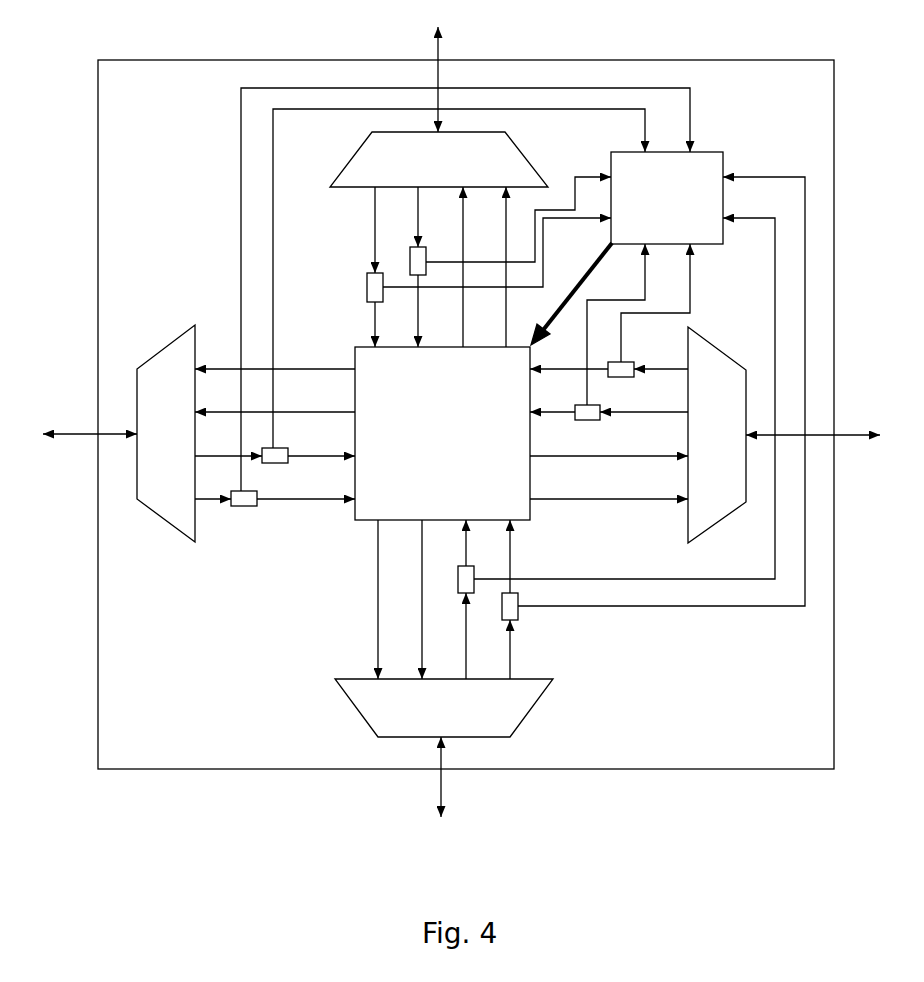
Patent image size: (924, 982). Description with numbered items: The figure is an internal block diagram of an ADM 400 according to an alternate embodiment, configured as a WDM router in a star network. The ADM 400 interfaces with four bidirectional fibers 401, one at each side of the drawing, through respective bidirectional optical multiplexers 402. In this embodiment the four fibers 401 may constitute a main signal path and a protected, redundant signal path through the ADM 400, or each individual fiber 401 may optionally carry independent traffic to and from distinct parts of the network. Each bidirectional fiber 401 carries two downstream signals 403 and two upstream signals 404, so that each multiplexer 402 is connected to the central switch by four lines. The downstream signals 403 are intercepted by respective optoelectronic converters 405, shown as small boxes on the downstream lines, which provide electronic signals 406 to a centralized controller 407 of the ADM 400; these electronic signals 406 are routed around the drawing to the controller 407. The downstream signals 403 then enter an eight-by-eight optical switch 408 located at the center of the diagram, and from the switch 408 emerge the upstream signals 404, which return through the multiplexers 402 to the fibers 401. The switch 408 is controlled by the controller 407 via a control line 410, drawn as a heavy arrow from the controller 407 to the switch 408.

The ADM 400 is at (150, 87).
The bidirectional fiber 401 is at (440, 34).
The bidirectional optical multiplexer 402 is at (455, 170).
The downstream signal 403 is at (374, 231).
The upstream signal 404 is at (462, 231).
The optoelectronic converter 405 is at (410, 250).
The electronic signal 406 is at (272, 146).
The centralized controller 407 is at (650, 207).
The 8×8 optical switch 408 is at (457, 469).
The control line 410 is at (558, 304).